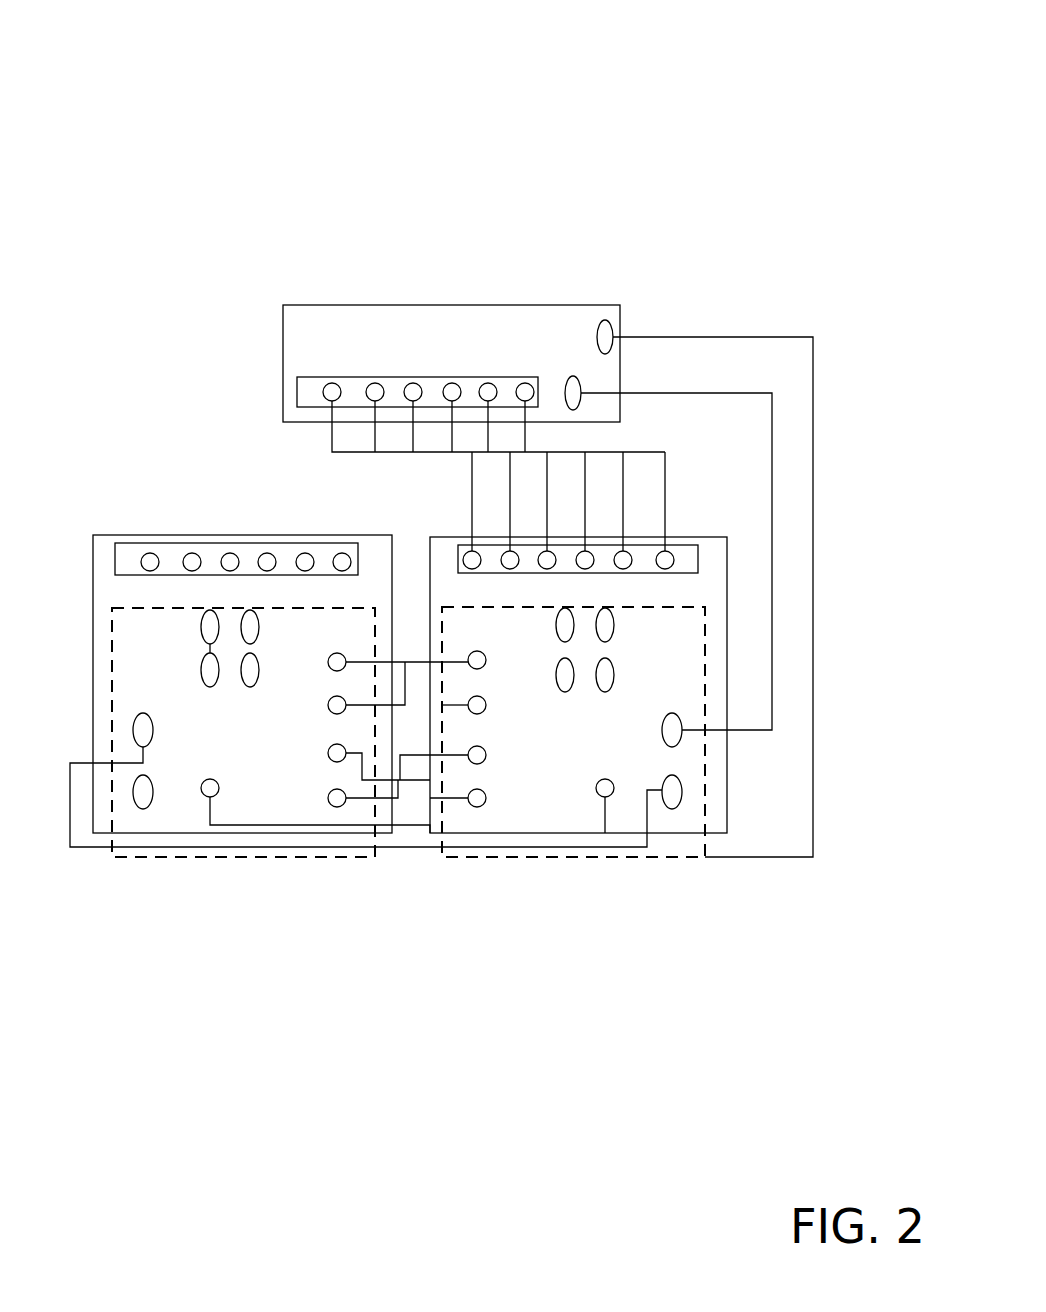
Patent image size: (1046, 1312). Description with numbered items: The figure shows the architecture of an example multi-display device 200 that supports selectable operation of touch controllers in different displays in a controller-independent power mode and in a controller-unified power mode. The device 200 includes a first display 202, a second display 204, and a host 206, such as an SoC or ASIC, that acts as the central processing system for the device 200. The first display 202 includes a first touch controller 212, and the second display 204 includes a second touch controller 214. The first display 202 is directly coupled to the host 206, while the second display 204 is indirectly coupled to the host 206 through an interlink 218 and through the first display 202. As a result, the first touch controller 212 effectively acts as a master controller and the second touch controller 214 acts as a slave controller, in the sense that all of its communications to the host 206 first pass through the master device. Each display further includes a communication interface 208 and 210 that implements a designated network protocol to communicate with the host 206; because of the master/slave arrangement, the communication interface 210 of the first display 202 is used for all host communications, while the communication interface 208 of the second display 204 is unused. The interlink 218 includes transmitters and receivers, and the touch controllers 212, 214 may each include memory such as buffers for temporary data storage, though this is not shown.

The device 200 is at (680, 93).
The first display 202 is at (630, 681).
The second display 204 is at (333, 696).
The host 206 is at (548, 570).
The communication interface 208 is at (230, 532).
The communication interface 210 is at (630, 539).
The first touch controller 212 is at (636, 732).
The second touch controller 214 is at (366, 755).
The interlink 218 is at (413, 848).